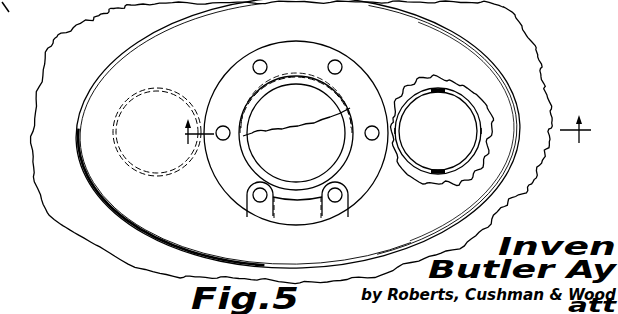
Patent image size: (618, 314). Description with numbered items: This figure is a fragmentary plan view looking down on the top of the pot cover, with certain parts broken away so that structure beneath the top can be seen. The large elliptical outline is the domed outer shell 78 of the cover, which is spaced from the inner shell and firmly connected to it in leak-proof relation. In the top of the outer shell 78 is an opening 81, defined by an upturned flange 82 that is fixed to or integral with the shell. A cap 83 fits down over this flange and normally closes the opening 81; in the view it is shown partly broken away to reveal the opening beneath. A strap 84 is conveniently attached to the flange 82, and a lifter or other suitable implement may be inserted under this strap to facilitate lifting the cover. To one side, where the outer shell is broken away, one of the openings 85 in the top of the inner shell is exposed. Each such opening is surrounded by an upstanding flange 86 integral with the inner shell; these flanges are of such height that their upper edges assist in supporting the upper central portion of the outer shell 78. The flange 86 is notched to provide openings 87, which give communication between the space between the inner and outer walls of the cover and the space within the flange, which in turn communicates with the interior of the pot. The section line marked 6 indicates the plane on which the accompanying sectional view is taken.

The domed outer shell 78 is at (297, 138).
The opening 81 is at (296, 133).
The upturned flange 82 is at (343, 153).
The cap 83 is at (296, 131).
The strap 84 is at (307, 210).
The openings 85 is at (438, 131).
The upstanding flange 86 is at (437, 90).
The openings 87 is at (470, 100).
The section line 6- 6 is at (386, 130).